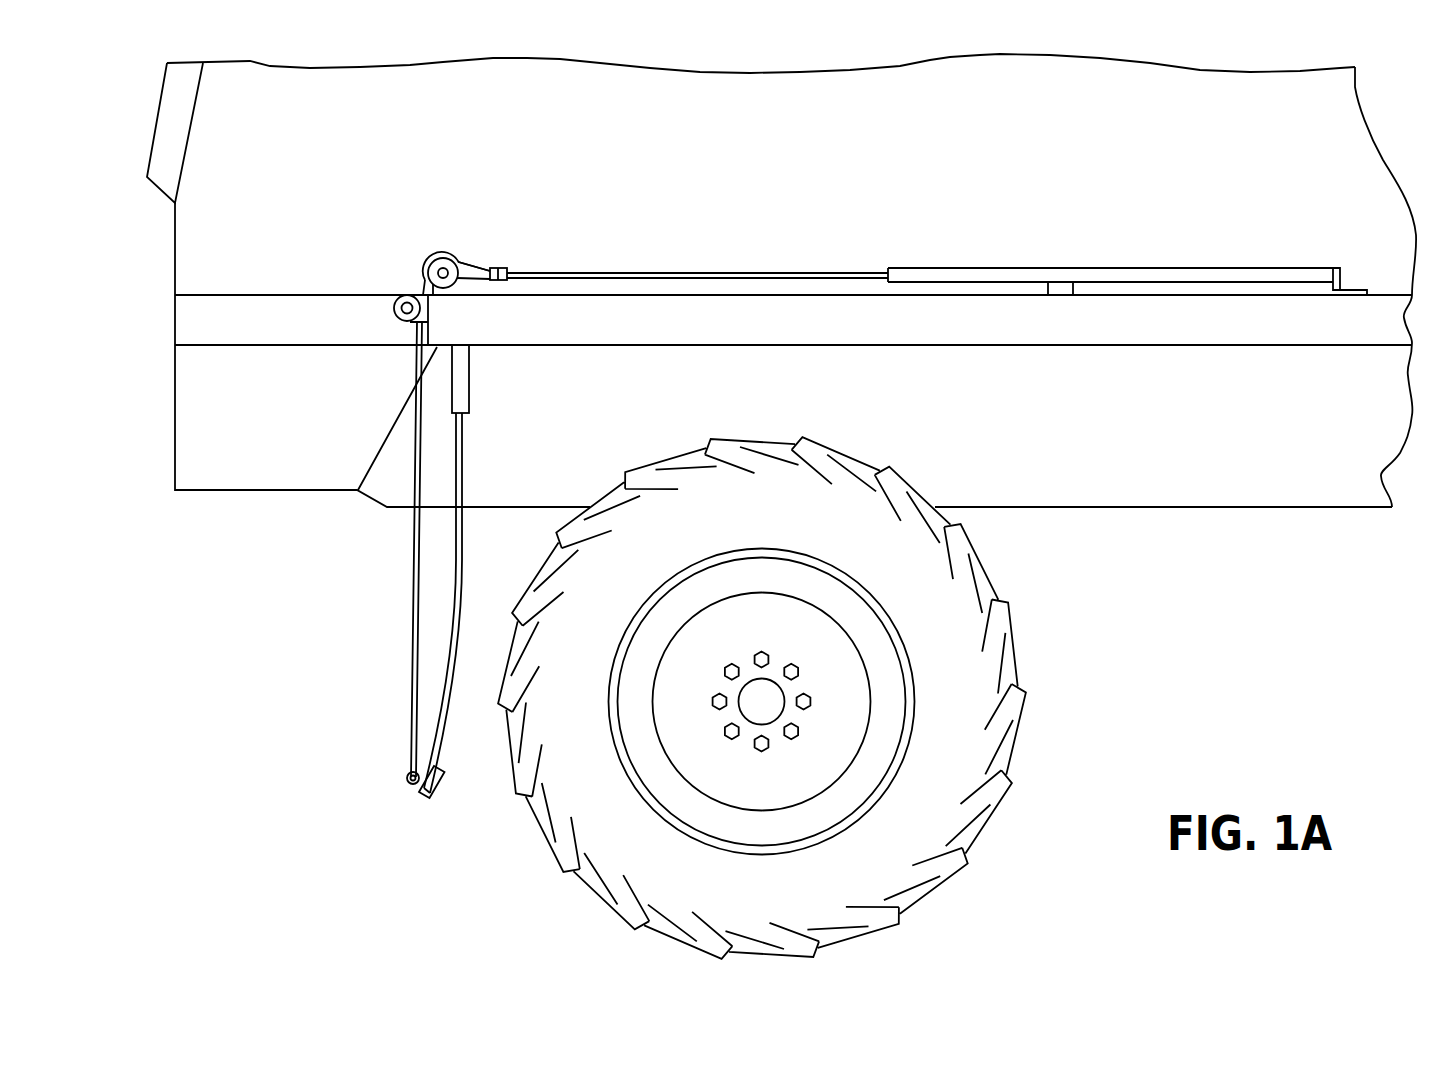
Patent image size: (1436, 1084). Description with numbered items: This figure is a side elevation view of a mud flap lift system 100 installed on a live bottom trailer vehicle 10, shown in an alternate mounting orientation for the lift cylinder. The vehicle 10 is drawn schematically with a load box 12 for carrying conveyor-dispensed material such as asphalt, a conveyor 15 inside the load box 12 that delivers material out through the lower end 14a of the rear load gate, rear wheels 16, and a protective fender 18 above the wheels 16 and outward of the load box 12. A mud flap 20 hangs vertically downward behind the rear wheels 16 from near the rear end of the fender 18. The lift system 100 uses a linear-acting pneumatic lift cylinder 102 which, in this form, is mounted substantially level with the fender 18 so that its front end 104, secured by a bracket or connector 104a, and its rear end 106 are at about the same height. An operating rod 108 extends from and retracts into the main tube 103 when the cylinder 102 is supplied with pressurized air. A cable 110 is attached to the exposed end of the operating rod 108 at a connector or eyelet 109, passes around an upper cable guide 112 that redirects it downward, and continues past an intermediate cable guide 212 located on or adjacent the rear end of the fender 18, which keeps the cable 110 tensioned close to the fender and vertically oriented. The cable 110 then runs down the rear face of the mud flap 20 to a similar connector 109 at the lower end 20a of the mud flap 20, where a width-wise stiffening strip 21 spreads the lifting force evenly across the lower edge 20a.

The live bottom trailer vehicle 10 is at (1383, 137).
The load box 12 is at (706, 133).
The lower end of the load gate 14a is at (161, 225).
The conveyor 15 is at (161, 258).
The rear wheels 16 is at (897, 880).
The protective fender 18 is at (615, 330).
The mud flap 20 is at (467, 553).
The lower end of the mud flap 20a is at (425, 800).
The width-wise bracket or strip 21 is at (444, 798).
The mud flap lift system 100 is at (857, 214).
The pneumatic lift cylinder 102 is at (1197, 268).
The main tube 103 is at (1113, 277).
The front end of the cylinder 104 is at (1327, 277).
The bracket or connector 104a is at (1360, 292).
The rear end of the cylinder 106 is at (1060, 285).
The operating rod 108 is at (693, 272).
The cable connector or eyelet 109 is at (498, 267).
The cable 110 is at (290, 262).
The upper cable guide 112 is at (422, 253).
The intermediate cable guide 212 is at (397, 312).